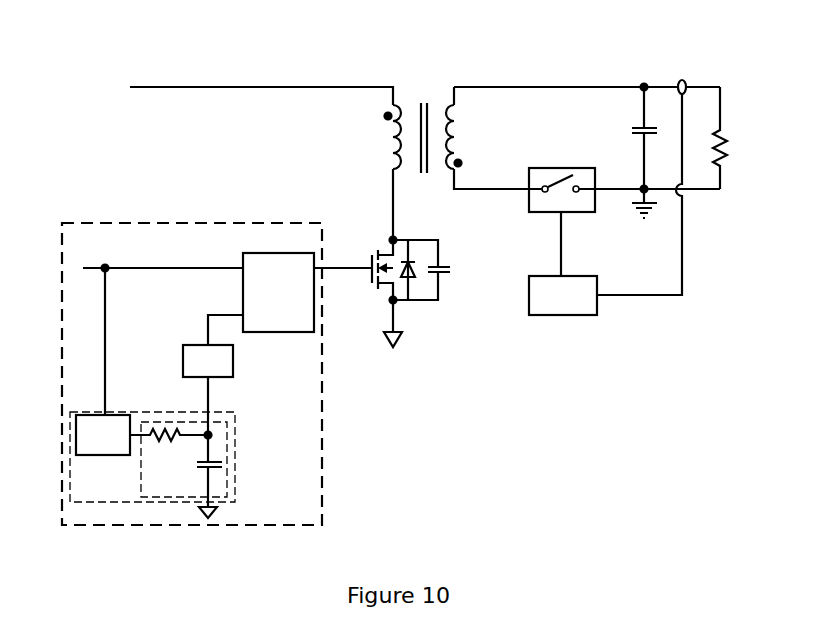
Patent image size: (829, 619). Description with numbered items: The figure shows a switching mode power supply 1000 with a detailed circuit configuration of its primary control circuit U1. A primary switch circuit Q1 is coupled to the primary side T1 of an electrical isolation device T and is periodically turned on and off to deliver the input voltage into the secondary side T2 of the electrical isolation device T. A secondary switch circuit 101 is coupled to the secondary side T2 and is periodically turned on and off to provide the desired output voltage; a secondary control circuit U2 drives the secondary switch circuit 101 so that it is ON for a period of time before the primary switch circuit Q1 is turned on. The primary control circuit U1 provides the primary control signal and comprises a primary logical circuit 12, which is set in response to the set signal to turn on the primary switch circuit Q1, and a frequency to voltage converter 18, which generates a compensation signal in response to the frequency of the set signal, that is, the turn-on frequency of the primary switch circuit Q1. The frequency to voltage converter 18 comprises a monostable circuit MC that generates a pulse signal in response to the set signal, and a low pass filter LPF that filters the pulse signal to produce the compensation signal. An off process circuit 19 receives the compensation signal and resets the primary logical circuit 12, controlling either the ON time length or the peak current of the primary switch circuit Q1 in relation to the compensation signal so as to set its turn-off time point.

The switching mode power supply 1000 is at (145, 65).
The primary logical circuit 12 is at (278, 292).
The off process circuit 19 is at (208, 361).
The frequency to voltage converter 18 is at (152, 457).
The secondary switch circuit 101 is at (541, 193).
The primary control circuit U1 is at (192, 374).
The secondary control circuit U2 is at (563, 295).
The primary switch circuit Q1 is at (382, 260).
The electrical isolation device T is at (420, 123).
The primary side T1 is at (376, 137).
The secondary side T2 is at (467, 136).
The monostable circuit MC is at (103, 435).
The low pass filter LPF is at (178, 459).